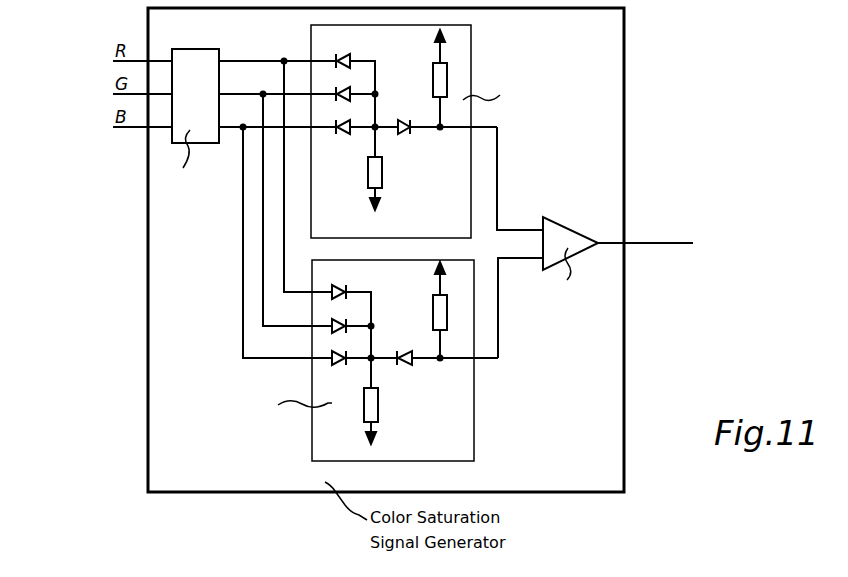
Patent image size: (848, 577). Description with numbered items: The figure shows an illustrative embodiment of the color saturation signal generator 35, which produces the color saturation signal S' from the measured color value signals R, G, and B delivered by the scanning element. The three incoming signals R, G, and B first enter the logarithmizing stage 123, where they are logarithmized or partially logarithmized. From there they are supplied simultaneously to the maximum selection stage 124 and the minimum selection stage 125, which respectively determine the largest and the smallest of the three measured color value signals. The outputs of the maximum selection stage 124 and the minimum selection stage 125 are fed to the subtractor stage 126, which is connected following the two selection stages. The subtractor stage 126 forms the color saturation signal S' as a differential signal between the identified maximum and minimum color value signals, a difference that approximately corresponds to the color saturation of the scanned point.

The color saturation signal generator 35 is at (618, 373).
The logarithmizing stage 123 is at (195, 60).
The maximum selection stage 124 is at (464, 71).
The minimum selection stage 125 is at (467, 404).
The subtractor stage 126 is at (575, 240).